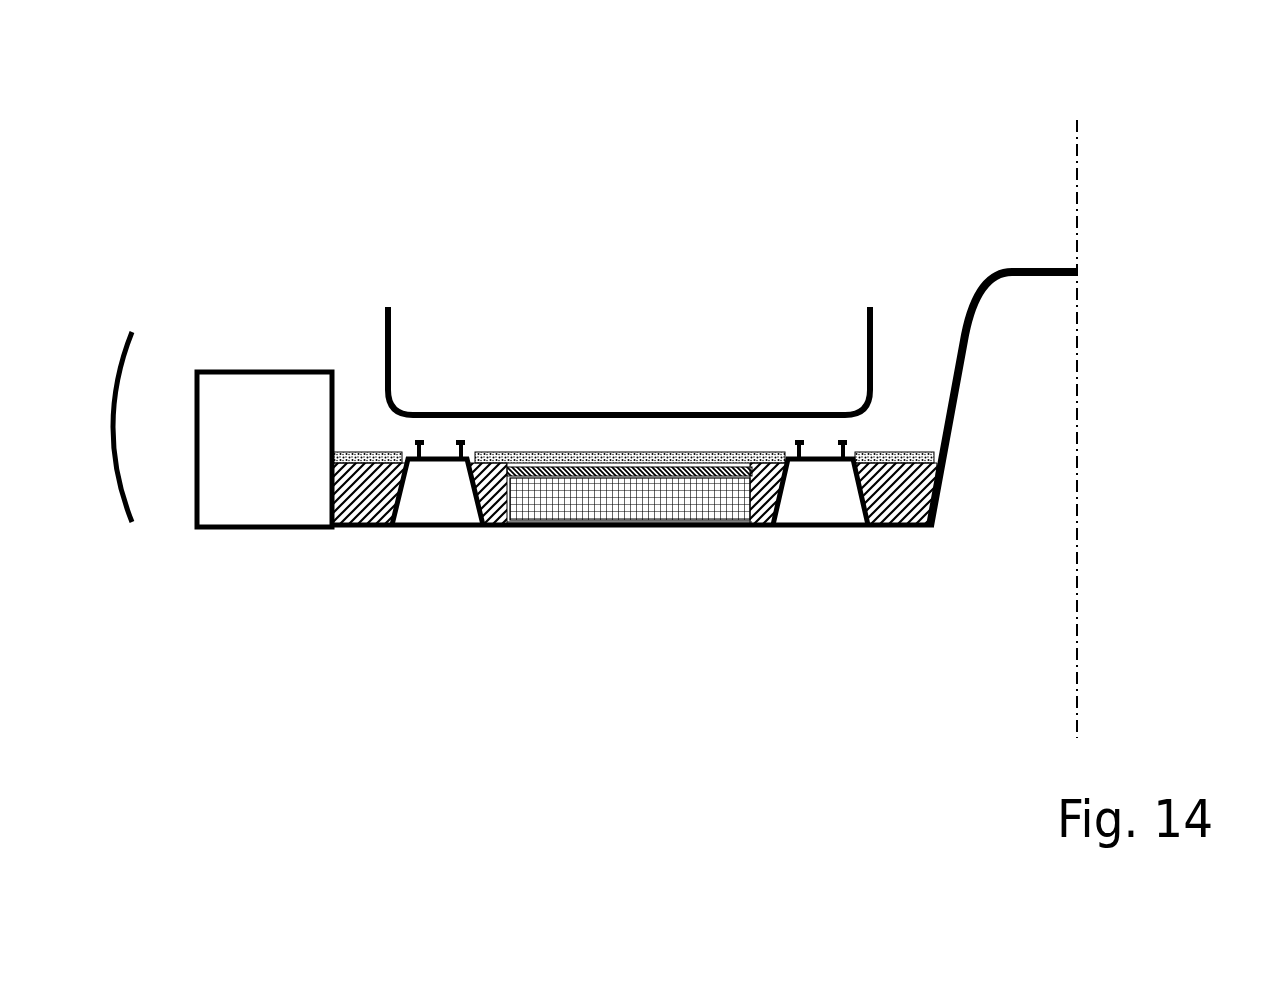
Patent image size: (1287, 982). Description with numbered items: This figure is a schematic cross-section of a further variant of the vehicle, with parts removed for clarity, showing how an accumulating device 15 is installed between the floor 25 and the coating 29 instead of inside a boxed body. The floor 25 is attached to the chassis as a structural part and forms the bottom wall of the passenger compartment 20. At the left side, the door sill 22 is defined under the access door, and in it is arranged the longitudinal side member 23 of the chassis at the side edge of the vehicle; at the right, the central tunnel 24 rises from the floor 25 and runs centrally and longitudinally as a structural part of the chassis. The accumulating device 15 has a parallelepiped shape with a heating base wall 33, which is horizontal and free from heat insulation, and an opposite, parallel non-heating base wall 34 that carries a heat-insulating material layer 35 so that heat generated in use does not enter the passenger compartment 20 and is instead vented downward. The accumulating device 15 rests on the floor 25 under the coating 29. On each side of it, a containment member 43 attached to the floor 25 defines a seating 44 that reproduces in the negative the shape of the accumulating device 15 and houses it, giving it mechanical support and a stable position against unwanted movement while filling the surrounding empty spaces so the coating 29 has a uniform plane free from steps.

The accumulating device 15 is at (712, 508).
The passenger compartment 20 is at (957, 180).
The door sill 22 is at (183, 272).
The longitudinal side member 23 is at (283, 372).
The central tunnel 24 is at (993, 279).
The floor 25 is at (647, 527).
The coating 29 is at (352, 452).
The heating base wall 33 is at (600, 527).
The non-heating base wall 34 is at (661, 456).
The heat-insulating material layer 35 is at (566, 467).
The containment member 43 is at (361, 527).
The seating 44 is at (590, 512).